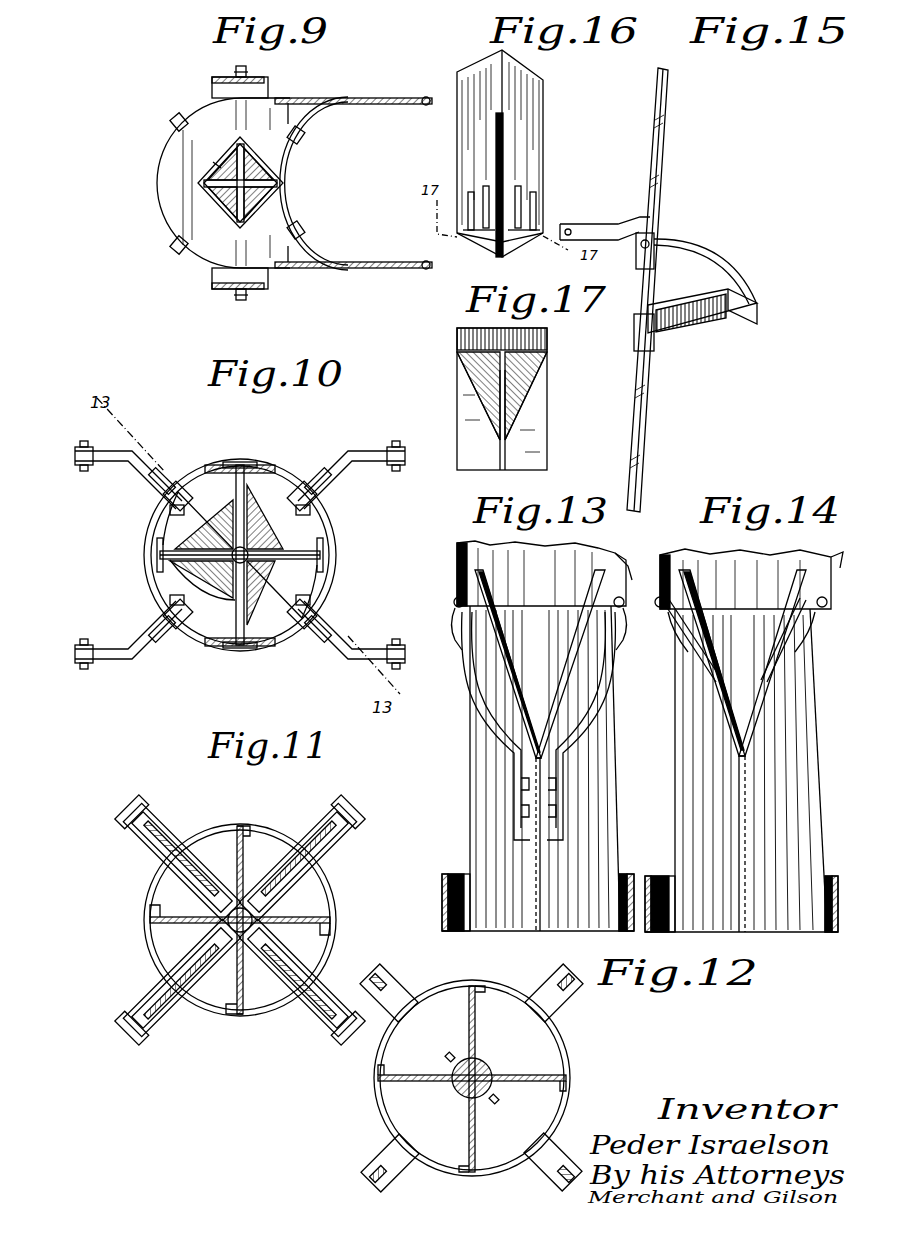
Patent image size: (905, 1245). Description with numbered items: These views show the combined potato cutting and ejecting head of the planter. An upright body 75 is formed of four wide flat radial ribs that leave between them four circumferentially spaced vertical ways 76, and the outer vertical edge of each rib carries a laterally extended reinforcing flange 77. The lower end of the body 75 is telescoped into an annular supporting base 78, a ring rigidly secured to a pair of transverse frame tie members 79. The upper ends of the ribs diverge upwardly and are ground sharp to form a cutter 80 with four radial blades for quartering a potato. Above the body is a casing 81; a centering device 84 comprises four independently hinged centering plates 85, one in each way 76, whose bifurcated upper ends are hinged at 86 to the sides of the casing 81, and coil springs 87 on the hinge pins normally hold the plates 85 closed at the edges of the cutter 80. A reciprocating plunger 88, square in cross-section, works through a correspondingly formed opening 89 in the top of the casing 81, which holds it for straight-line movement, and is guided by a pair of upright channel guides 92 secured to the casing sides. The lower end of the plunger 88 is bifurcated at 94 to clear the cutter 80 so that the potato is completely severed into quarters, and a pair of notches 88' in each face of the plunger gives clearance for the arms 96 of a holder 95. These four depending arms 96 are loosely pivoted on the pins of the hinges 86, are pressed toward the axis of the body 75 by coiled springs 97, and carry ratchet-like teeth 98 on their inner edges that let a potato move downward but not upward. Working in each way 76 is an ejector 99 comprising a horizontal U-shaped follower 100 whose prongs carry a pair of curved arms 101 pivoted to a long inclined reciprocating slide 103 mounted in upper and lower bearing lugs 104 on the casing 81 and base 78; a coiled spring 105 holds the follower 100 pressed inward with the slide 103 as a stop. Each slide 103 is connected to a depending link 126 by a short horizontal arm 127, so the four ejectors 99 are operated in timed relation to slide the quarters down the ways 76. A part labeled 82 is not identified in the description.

In FIG. 10, the upright body 75 is at (238, 462).
In FIG. 11, the upright body 75 is at (150, 921).
In FIG. 12, the upright body 75 is at (410, 1086).
In FIG. 13, the upright body 75 is at (595, 760).
In FIG. 14, the upright body 75 is at (800, 810).
In FIG. 11, the vertical ways 76 is at (246, 908).
In FIG. 12, the vertical ways 76 is at (486, 1070).
In FIG. 13, the vertical ways 76 is at (528, 875).
In FIG. 14, the vertical ways 76 is at (726, 830).
In FIG. 12, the reinforcing flange 77 is at (385, 1062).
In FIG. 10, the annular supporting base 78 is at (244, 462).
In FIG. 11, the annular supporting base 78 is at (250, 1016).
In FIG. 12, the annular supporting base 78 is at (570, 1058).
In FIG. 13, the annular supporting base 78 is at (442, 899).
In FIG. 14, the annular supporting base 78 is at (836, 932).
In FIG. 10, the transverse frame tie members 79 is at (230, 552).
In FIG. 11, the transverse frame tie members 79 is at (228, 918).
In FIG. 13, the transverse frame tie members 79 is at (524, 800).
In FIG. 13, the cutter 80 is at (566, 668).
In FIG. 14, the cutter 80 is at (758, 704).
In FIG. 9, the casing 81 is at (348, 100).
In FIG. 13, the casing 81 is at (475, 550).
In FIG. 14, the casing 81 is at (678, 558).
In FIG. 13, the latch 82 is at (624, 568).
In FIG. 14, the latch 82 is at (835, 555).
In FIG. 10, the centering device 84 is at (312, 553).
In FIG. 14, the centering device 84 is at (700, 618).
In FIG. 10, the centering plates 85 is at (282, 535).
In FIG. 14, the centering plates 85 is at (772, 650).
In FIG. 10, the hinges 86 is at (285, 596).
In FIG. 13, the hinges 86 is at (453, 606).
In FIG. 14, the hinges 86 is at (660, 596).
In FIG. 10, the coil springs 87 is at (305, 505).
In FIG. 14, the coil springs 87 is at (685, 658).
In FIG. 9, the reciprocating plunger 88 is at (206, 183).
In FIG. 16, the reciprocating plunger 88 is at (520, 153).
In FIG. 17, the reciprocating plunger 88 is at (516, 396).
In FIG. 16, the notches 88' is at (500, 185).
In FIG. 9, the opening 89 is at (234, 148).
In FIG. 9, the channel guides 92 is at (222, 78).
In FIG. 9, the bifurcated lower end 94 is at (238, 150).
In FIG. 17, the bifurcated lower end 94 is at (532, 438).
In FIG. 11, the holder 95 is at (300, 896).
In FIG. 13, the holder 95 is at (460, 682).
In FIG. 14, the holder 95 is at (675, 630).
In FIG. 10, the arms 96 is at (272, 470).
In FIG. 11, the arms 96 is at (280, 860).
In FIG. 12, the arms 96 is at (452, 1052).
In FIG. 13, the arms 96 is at (466, 690).
In FIG. 13, the coiled springs 97 is at (452, 640).
In FIG. 14, the coiled springs 97 is at (664, 626).
In FIG. 12, the ratchet-like teeth 98 is at (450, 1058).
In FIG. 13, the ratchet-like teeth 98 is at (521, 782).
In FIG. 15, the ejector 99 is at (666, 202).
In FIG. 15, the U-shaped follower 100 is at (724, 312).
In FIG. 11, the U-shaped follower 100 is at (212, 862).
In FIG. 15, the arms 101 is at (720, 280).
In FIG. 11, the arms 101 is at (150, 850).
In FIG. 15, the slide 103 is at (664, 166).
In FIG. 10, the slide 103 is at (162, 476).
In FIG. 11, the slide 103 is at (148, 800).
In FIG. 12, the slide 103 is at (385, 980).
In FIG. 10, the bearing lugs 104 is at (172, 488).
In FIG. 11, the bearing lugs 104 is at (150, 812).
In FIG. 12, the bearing lugs 104 is at (540, 995).
In FIG. 15, the coiled spring 105 is at (645, 262).
In FIG. 10, the links 126 is at (86, 447).
In FIG. 15, the arm 127 is at (612, 224).
In FIG. 10, the arm 127 is at (120, 463).